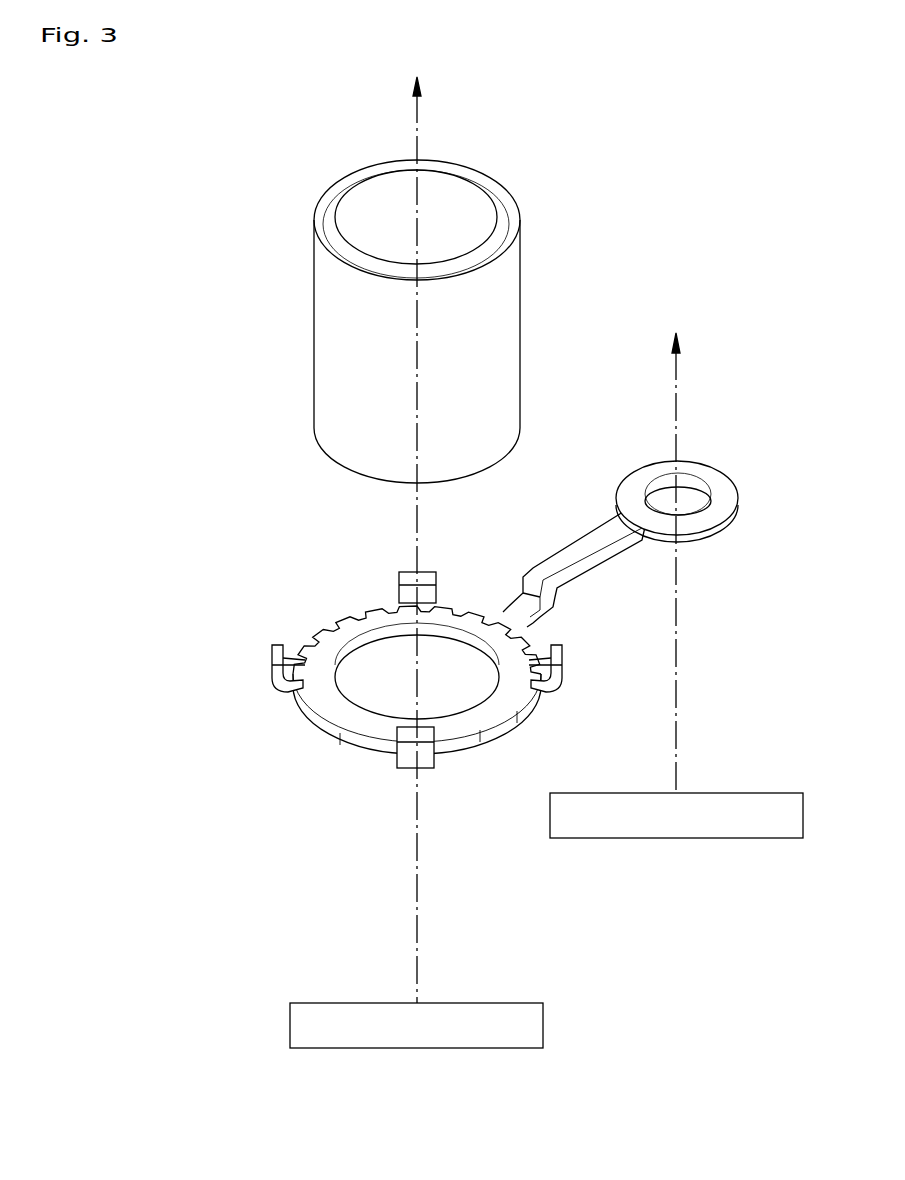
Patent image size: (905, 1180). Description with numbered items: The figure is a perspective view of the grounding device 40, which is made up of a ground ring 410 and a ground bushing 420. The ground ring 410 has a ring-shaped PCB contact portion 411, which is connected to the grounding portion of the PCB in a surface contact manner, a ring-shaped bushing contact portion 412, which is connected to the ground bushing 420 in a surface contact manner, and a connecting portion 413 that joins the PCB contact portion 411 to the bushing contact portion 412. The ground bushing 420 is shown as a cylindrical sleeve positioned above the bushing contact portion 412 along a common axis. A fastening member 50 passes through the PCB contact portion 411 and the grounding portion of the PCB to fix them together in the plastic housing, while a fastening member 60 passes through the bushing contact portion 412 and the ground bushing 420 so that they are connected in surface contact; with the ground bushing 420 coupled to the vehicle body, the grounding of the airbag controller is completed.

The grounding device 40 is at (113, 203).
The ground ring 410 is at (470, 583).
The PCB contact portion 411 is at (712, 478).
The bushing contact portion 412 is at (340, 613).
The connecting portion 413 is at (570, 557).
The ground bushing 420 is at (340, 347).
The fastening member 50 is at (676, 838).
The fastening member 60 is at (416, 1048).